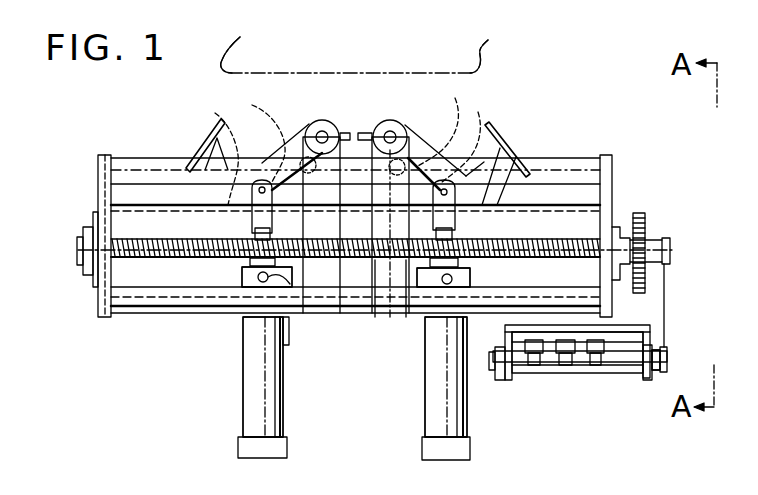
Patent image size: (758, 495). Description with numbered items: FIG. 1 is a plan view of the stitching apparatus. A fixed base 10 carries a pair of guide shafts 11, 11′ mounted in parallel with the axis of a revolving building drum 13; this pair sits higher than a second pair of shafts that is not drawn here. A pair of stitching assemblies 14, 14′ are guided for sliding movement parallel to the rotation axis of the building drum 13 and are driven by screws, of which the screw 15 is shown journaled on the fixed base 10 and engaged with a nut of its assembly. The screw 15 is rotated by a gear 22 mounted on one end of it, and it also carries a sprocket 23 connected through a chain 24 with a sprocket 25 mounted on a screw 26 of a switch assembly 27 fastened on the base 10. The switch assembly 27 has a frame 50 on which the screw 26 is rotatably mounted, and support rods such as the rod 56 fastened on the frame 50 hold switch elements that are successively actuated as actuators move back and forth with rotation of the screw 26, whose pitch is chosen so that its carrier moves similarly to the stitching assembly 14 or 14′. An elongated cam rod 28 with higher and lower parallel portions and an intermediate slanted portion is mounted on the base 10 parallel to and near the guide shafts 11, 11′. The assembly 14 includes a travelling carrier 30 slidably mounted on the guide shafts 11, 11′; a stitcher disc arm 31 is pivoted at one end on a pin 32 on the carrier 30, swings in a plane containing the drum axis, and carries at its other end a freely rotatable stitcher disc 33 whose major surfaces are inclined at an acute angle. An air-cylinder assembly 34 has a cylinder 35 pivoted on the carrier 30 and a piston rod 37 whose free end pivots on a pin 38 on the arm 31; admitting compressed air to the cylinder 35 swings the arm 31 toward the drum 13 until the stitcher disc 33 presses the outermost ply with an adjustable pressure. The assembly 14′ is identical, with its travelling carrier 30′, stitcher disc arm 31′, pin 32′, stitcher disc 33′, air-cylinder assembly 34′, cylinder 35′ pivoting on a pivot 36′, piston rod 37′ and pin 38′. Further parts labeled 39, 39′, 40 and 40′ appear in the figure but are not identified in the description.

The fixed base 10 is at (98, 182).
The guide shaft 11 is at (112, 206).
The guide shaft 11′ is at (147, 300).
The revolving building drum 13 is at (486, 52).
The stitching assembly 14 is at (422, 355).
The stitching assembly 14′ is at (232, 375).
The screw 15 is at (126, 300).
The gear 22 is at (650, 203).
The sprocket 23 is at (673, 231).
The chain 24 is at (664, 296).
The sprocket 25 is at (668, 350).
The screw 26 is at (617, 357).
The switch assembly 27 is at (579, 367).
The cam rod 28 is at (578, 164).
The travelling carrier 30 is at (385, 300).
The travelling carrier 30′ is at (345, 300).
The stitcher disc arm 31 is at (434, 152).
The stitcher disc arm 31′ is at (278, 147).
The pin 32 is at (406, 128).
The pin 32′ is at (321, 120).
The stitcher disc 33 is at (503, 147).
The stitcher disc 33′ is at (200, 150).
The air-cylinder assembly 34 is at (468, 267).
The air-cylinder assembly 34′ is at (227, 300).
The cylinder 35 is at (470, 412).
The cylinder 35′ is at (243, 428).
The pivot 36′ is at (287, 320).
The piston rod 37 is at (462, 238).
The piston rod 37′ is at (218, 300).
The pin 38 is at (506, 135).
The pin 38′ is at (205, 130).
The link 39 is at (362, 131).
The link 39′ is at (366, 108).
The phantom position 40 is at (449, 132).
The phantom position 40′ is at (250, 144).
The frame 50 is at (652, 375).
The support rod 56 is at (548, 350).